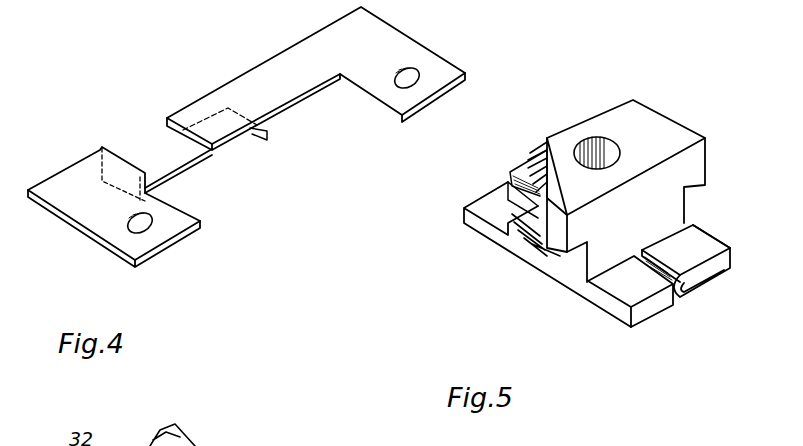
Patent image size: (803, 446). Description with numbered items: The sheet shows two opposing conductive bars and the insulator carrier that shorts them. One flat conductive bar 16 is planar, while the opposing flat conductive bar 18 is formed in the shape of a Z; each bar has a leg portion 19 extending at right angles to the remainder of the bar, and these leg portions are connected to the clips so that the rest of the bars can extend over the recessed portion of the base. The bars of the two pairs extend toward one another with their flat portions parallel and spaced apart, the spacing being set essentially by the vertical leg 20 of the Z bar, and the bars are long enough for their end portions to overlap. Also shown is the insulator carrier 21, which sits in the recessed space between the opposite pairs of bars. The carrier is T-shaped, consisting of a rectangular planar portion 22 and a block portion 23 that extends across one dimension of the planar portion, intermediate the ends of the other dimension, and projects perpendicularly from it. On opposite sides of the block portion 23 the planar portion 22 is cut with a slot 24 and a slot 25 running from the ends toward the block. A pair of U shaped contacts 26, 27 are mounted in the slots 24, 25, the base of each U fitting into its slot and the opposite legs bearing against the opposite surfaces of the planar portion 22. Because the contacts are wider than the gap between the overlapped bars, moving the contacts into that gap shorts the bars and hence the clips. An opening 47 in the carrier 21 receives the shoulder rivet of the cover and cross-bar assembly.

In FIG. 4, the flat conductive bar 16 is at (292, 65).
In FIG. 4, the flat conductive bar 18 is at (67, 192).
In FIG. 4, the leg portion 19 is at (435, 67).
In FIG. 4, the vertical leg 20 is at (147, 177).
In FIG. 5, the insulator carrier 21 is at (484, 229).
In FIG. 5, the rectangular planar portion 22 is at (630, 291).
In FIG. 5, the block portion 23 is at (656, 152).
In FIG. 5, the slot 24 is at (693, 244).
In FIG. 5, the slot 25 is at (512, 187).
In FIG. 5, the U shaped contact 26 is at (680, 298).
In FIG. 5, the U shaped contact 27 is at (537, 173).
In FIG. 5, the opening 47 is at (607, 140).